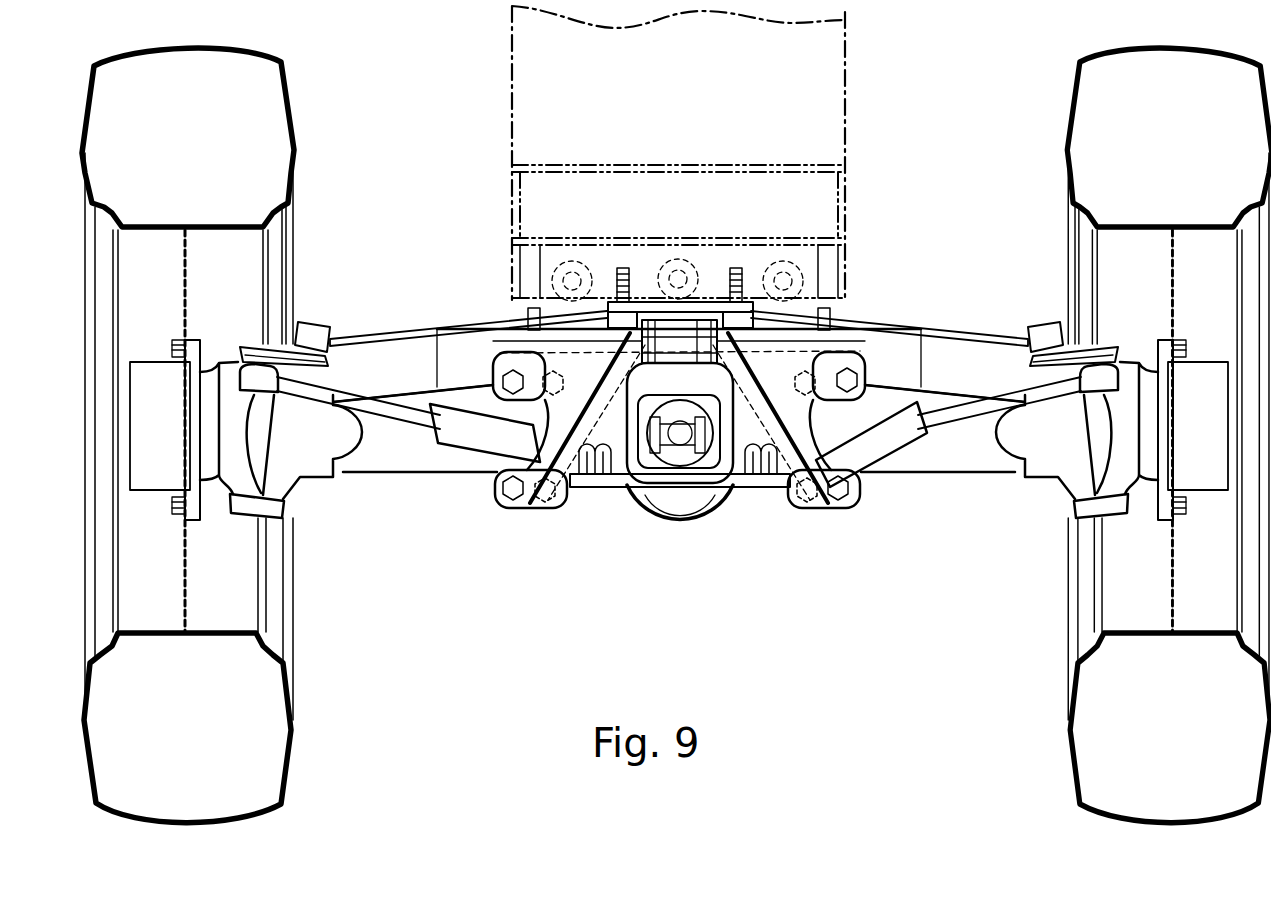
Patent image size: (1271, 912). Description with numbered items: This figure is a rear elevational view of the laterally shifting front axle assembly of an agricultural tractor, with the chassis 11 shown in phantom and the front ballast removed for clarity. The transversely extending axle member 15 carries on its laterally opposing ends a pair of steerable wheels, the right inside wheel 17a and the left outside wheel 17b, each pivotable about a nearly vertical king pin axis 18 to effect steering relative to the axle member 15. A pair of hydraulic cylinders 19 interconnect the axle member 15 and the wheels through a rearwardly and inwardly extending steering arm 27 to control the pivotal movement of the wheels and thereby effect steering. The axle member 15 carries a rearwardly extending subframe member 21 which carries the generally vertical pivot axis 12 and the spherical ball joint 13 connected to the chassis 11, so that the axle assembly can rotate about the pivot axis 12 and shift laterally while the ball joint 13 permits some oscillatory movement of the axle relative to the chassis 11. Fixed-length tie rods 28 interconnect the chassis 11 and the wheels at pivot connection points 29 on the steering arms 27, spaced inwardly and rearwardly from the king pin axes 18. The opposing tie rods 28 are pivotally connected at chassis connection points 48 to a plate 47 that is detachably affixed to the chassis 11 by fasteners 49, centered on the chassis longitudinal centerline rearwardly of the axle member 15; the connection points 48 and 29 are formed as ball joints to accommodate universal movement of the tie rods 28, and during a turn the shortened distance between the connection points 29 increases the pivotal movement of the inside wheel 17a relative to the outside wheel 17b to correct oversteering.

The chassis 11 is at (848, 58).
The vertical pivot axis 12 is at (673, 277).
The spherical ball joint 13 is at (630, 500).
The axle member 15 is at (970, 477).
The inside wheel 17a is at (1073, 117).
The outside wheel 17b is at (288, 105).
The king pin axis 18 is at (255, 505).
The hydraulic cylinder 19 is at (470, 436).
The subframe member 21 is at (903, 433).
The steering arm 27 is at (340, 330).
The tie rod 28 is at (447, 330).
The pivot connection point 29 is at (308, 333).
The plate 47 is at (706, 268).
The chassis connection point 48 is at (530, 334).
The fastener 49 is at (623, 268).